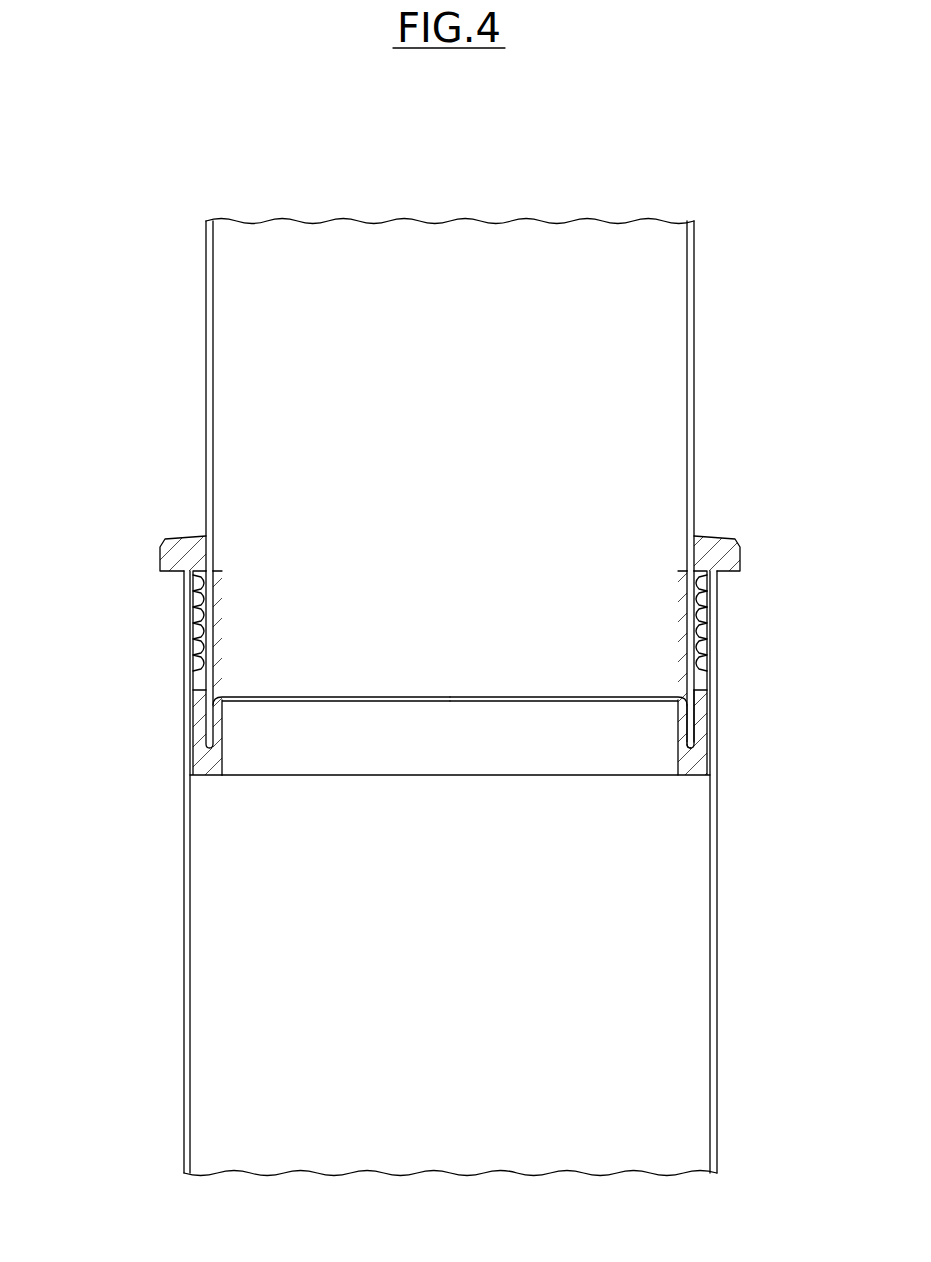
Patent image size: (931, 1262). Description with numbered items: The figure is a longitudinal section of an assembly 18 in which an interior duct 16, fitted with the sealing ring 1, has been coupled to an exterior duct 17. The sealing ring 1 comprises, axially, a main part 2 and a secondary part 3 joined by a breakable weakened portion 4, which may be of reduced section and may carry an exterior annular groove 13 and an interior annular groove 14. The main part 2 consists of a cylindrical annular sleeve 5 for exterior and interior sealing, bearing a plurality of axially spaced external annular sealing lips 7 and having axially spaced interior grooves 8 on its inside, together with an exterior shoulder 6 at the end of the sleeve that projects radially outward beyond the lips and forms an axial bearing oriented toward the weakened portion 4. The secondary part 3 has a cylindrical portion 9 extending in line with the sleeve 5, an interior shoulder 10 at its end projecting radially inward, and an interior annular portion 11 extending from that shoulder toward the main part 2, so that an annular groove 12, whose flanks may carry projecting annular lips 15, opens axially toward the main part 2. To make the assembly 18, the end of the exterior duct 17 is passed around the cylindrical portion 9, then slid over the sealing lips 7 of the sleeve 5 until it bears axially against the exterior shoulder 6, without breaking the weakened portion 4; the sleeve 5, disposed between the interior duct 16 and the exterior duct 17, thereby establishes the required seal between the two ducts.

The sealing ring 1 is at (145, 534).
The main part 2 is at (178, 628).
The secondary part 3 is at (180, 742).
The weakened portion 4 is at (188, 699).
The cylindrical annular sleeve 5 is at (700, 640).
The exterior shoulder 6 is at (735, 553).
The external annular sealing lips 7 is at (703, 609).
The interior grooves 8 is at (207, 636).
The cylindrical portion 9 is at (697, 712).
The interior shoulder 10 is at (691, 760).
The interior annular portion 11 is at (682, 727).
The annular groove 12 is at (692, 723).
The exterior annular groove 13 is at (697, 695).
The interior annular groove 14 is at (214, 697).
The projecting annular lips 15 is at (691, 738).
The interior duct 16 is at (694, 400).
The exterior duct 17 is at (717, 975).
The assembly 18 is at (102, 463).